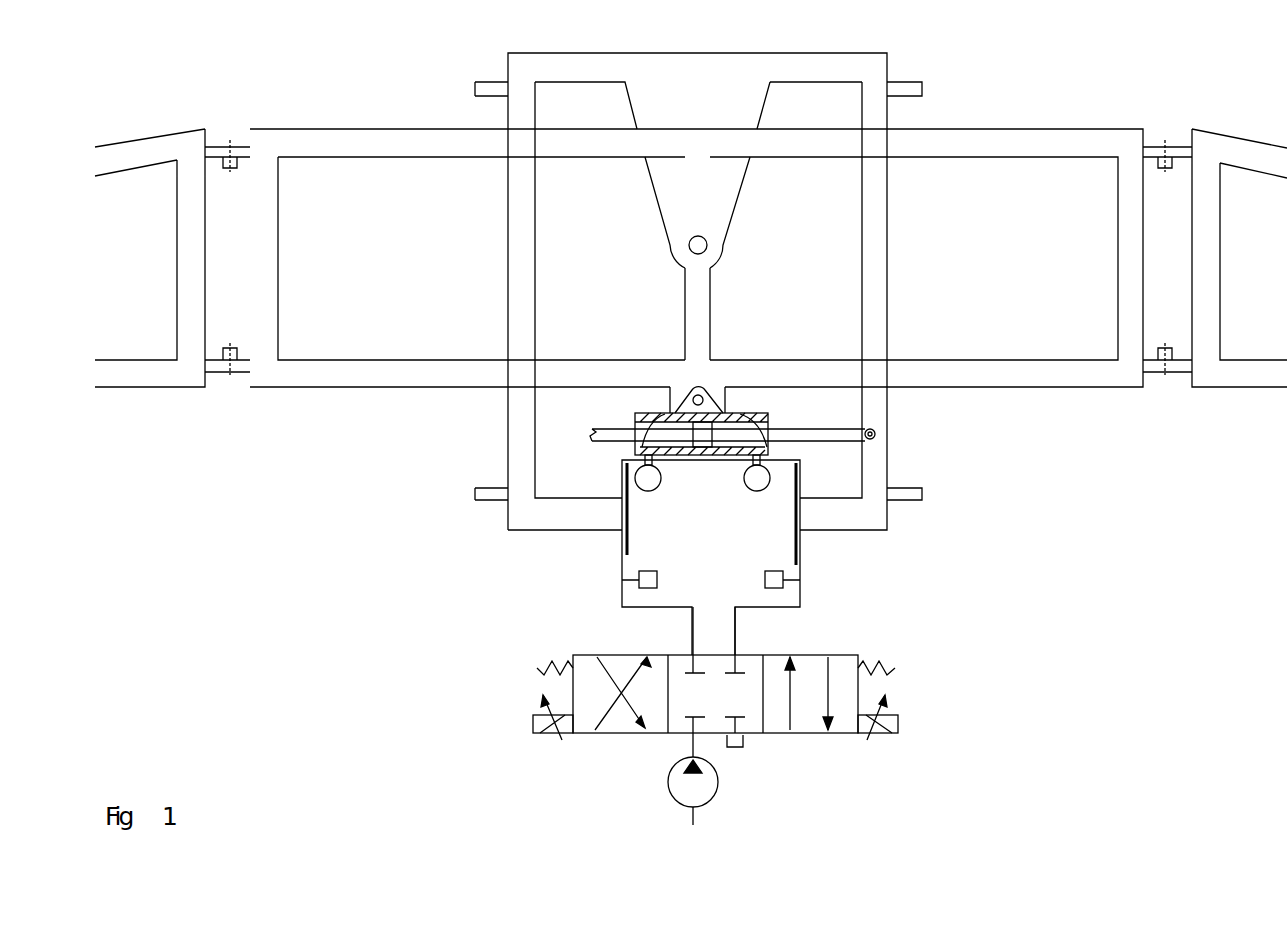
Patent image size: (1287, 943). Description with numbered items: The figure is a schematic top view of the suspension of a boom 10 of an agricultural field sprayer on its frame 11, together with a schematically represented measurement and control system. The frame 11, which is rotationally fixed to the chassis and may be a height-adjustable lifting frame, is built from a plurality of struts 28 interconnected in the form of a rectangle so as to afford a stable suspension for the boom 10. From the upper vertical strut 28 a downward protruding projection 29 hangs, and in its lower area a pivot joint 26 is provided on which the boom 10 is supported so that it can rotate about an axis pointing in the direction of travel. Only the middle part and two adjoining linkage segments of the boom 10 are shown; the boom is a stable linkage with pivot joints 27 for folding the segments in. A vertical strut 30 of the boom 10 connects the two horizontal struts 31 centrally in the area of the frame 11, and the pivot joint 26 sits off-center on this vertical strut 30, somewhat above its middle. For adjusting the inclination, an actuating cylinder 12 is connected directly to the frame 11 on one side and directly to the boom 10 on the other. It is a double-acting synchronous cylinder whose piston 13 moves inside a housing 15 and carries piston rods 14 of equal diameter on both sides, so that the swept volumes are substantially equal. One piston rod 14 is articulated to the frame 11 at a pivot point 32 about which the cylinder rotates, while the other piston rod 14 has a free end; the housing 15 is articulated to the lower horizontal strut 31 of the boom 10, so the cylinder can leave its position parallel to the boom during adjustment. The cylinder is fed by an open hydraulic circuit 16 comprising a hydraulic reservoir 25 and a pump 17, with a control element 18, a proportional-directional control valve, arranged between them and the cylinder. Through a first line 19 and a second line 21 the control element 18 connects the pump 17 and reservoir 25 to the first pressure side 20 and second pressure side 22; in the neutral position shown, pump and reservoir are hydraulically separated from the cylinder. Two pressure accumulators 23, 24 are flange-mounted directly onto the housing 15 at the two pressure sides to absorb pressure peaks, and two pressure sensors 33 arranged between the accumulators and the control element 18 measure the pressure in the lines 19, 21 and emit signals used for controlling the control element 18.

The boom 10 is at (995, 142).
The frame 11 is at (875, 58).
The actuating cylinder 12 is at (755, 413).
The piston 13 is at (701, 437).
The piston rods 14 is at (813, 434).
The housing 15 is at (662, 413).
The hydraulic circuit 16 is at (817, 595).
The pump 17 is at (695, 782).
The control element 18 is at (625, 733).
The first line 19 is at (622, 541).
The first pressure side 20 is at (640, 422).
The second line 21 is at (800, 551).
The second pressure side 22 is at (772, 449).
The pressure accumulator 23 is at (648, 478).
The pressure accumulator 24 is at (758, 480).
The hydraulic reservoir 25 is at (743, 742).
The pivot joint 26 is at (707, 247).
The pivot joints 27 is at (1165, 140).
The struts 28 is at (877, 275).
The projection 29 is at (670, 182).
The vertical strut 30 is at (697, 298).
The horizontal struts 31 is at (897, 145).
The pivot point 32 is at (876, 434).
The pressure sensors 33 is at (765, 578).